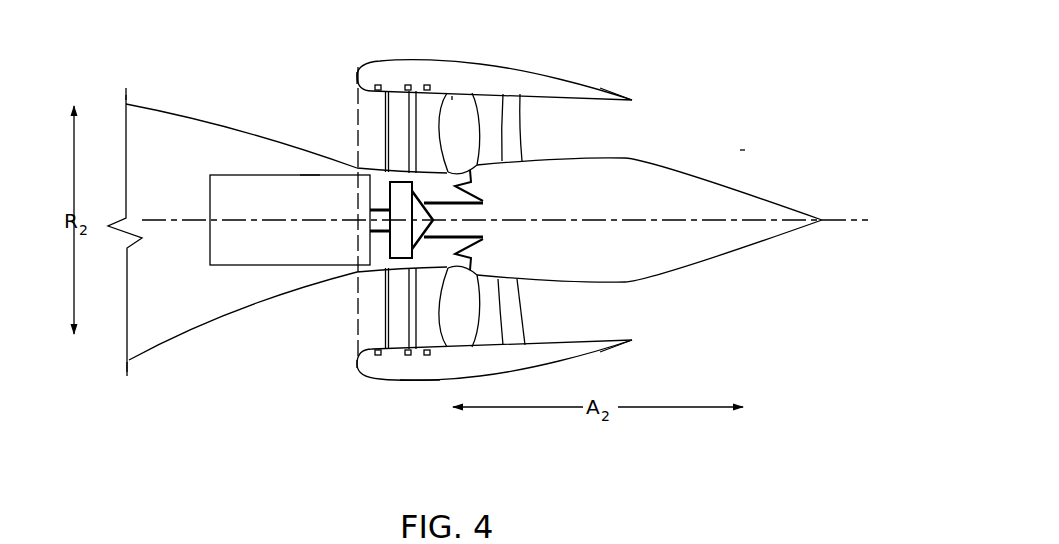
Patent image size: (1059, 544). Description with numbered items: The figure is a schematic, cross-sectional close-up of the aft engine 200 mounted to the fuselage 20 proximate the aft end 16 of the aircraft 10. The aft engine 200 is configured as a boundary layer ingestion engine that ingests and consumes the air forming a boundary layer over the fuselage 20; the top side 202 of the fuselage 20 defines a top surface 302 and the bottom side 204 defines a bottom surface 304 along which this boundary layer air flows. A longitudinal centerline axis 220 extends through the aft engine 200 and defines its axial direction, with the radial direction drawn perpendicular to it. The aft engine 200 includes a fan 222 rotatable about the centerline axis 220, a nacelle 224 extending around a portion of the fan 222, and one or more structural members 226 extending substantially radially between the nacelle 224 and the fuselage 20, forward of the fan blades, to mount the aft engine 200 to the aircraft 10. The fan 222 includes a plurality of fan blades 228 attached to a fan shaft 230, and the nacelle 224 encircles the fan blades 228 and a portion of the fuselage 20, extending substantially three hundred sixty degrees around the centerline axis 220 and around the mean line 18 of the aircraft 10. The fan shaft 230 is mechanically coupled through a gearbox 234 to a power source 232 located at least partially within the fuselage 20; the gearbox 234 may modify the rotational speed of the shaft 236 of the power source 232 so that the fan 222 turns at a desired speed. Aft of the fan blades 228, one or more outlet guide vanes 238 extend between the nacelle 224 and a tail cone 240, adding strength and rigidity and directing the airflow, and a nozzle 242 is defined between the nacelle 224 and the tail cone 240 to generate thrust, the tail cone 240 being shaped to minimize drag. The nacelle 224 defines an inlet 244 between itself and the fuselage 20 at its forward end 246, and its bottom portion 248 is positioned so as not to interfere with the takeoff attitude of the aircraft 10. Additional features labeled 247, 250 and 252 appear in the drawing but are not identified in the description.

The aircraft 10 is at (243, 66).
The aft end 16 is at (758, 135).
The mean line 18 is at (163, 218).
The fuselage 20 is at (232, 216).
The aft engine 200 is at (706, 36).
The top side 202 is at (195, 121).
The bottom side 204 is at (208, 322).
The longitudinal centerline axis 220 is at (850, 218).
The fan 222 is at (464, 104).
The nacelle 224 is at (482, 62).
The structural members 226 is at (357, 95).
The fan blades 228 is at (470, 120).
The fan shaft 230 is at (470, 212).
The power source 232 is at (308, 173).
The gearbox 234 is at (388, 193).
The shaft 236 is at (382, 235).
The outlet guide vanes 238 is at (517, 313).
The tail cone 240 is at (675, 165).
The nozzle 242 is at (626, 130).
The inlet 244 is at (365, 335).
The forward end 246 is at (352, 370).
The forward strut 247 is at (397, 103).
The bottom portion 248 is at (424, 390).
The shroud airfoil 250 is at (487, 363).
The shroud trailing edge 252 is at (648, 332).
The top surface 302 is at (142, 94).
The bottom surface 304 is at (142, 369).